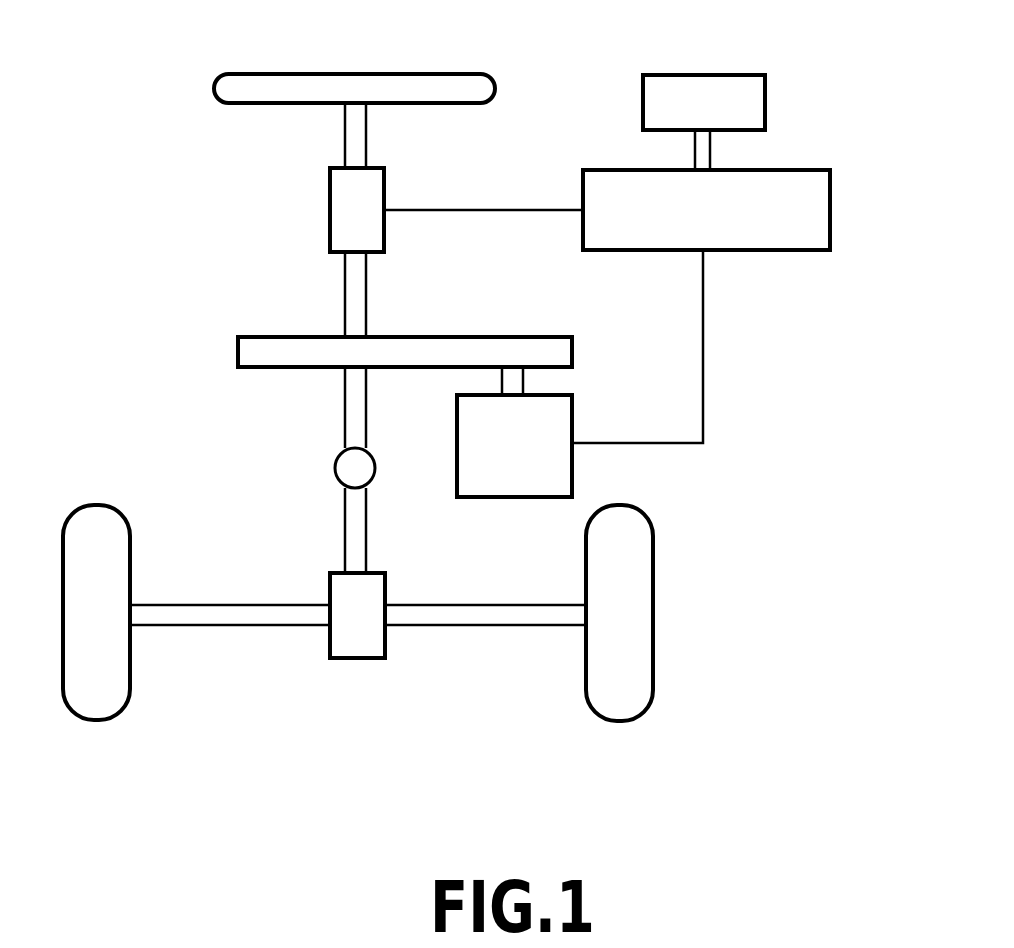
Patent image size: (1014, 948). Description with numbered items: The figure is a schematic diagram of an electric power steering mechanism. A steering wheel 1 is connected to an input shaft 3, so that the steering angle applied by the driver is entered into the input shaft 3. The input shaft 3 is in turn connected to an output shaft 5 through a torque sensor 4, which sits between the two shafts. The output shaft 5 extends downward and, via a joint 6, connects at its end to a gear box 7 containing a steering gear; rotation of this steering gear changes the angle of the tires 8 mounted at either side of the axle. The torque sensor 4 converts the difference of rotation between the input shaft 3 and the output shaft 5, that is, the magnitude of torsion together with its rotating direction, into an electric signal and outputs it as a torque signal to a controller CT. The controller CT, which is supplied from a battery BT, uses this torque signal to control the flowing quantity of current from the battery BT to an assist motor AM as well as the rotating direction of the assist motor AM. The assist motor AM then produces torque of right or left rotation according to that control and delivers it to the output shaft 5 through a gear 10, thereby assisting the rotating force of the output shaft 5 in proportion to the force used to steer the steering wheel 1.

The steering wheel 1 is at (460, 73).
The input shaft 3 is at (344, 137).
The torque sensor 4 is at (384, 192).
The output shaft 5 is at (344, 292).
The joint 6 is at (335, 466).
The gear box 7 is at (362, 658).
The tires 8 is at (653, 573).
The gear 10 is at (510, 336).
The battery BT is at (765, 102).
The controller CT is at (830, 202).
The assist motor AM is at (572, 423).